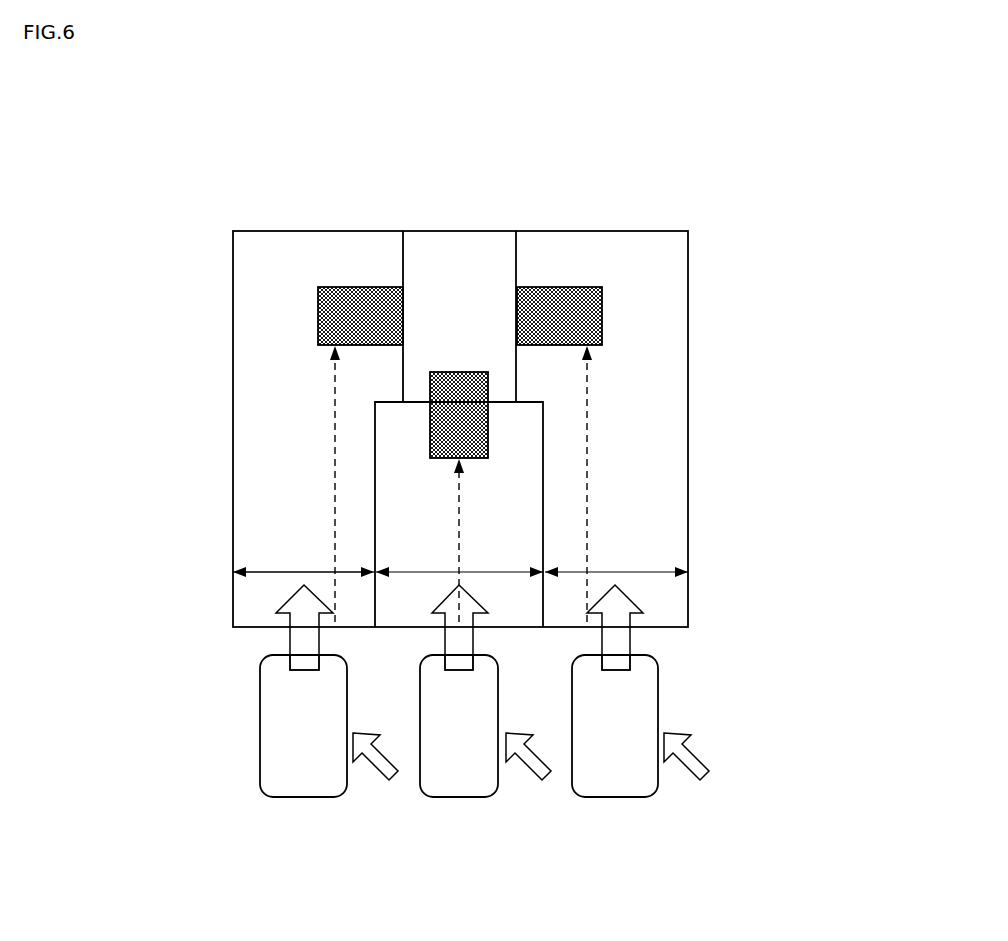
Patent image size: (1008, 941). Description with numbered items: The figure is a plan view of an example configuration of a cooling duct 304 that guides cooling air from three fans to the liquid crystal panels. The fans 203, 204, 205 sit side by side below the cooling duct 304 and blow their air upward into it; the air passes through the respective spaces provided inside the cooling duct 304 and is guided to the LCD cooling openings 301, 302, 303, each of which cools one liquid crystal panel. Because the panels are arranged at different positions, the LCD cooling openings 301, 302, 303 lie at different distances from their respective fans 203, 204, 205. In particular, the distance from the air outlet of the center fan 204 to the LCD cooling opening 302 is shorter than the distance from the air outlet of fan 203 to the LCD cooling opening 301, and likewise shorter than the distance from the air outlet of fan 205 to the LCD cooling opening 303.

The LCD cooling opening 301 is at (575, 300).
The LCD cooling opening 302 is at (465, 383).
The LCD cooling opening 303 is at (372, 307).
The cooling duct 304 is at (689, 353).
The fan 203 is at (615, 785).
The fan 204 is at (458, 787).
The fan 205 is at (305, 782).